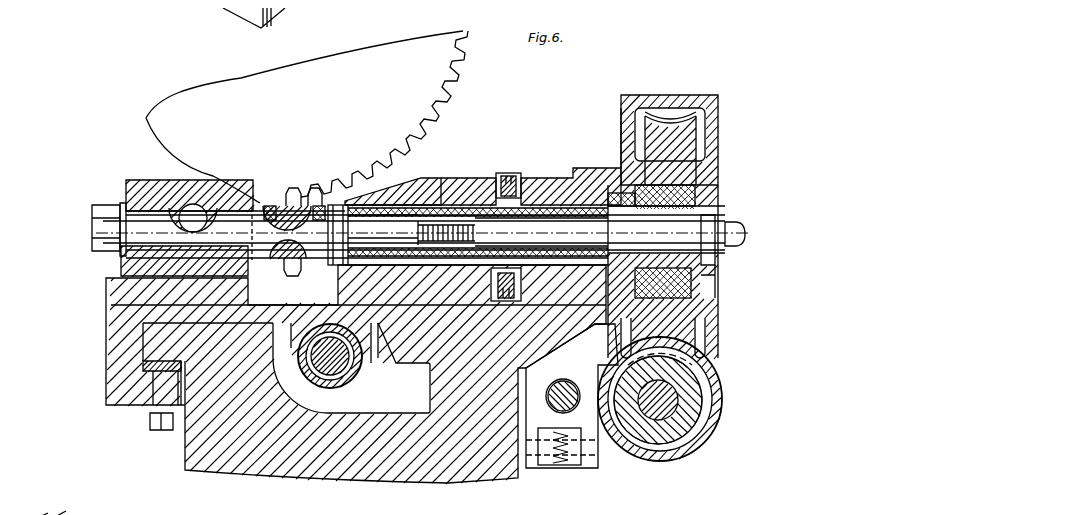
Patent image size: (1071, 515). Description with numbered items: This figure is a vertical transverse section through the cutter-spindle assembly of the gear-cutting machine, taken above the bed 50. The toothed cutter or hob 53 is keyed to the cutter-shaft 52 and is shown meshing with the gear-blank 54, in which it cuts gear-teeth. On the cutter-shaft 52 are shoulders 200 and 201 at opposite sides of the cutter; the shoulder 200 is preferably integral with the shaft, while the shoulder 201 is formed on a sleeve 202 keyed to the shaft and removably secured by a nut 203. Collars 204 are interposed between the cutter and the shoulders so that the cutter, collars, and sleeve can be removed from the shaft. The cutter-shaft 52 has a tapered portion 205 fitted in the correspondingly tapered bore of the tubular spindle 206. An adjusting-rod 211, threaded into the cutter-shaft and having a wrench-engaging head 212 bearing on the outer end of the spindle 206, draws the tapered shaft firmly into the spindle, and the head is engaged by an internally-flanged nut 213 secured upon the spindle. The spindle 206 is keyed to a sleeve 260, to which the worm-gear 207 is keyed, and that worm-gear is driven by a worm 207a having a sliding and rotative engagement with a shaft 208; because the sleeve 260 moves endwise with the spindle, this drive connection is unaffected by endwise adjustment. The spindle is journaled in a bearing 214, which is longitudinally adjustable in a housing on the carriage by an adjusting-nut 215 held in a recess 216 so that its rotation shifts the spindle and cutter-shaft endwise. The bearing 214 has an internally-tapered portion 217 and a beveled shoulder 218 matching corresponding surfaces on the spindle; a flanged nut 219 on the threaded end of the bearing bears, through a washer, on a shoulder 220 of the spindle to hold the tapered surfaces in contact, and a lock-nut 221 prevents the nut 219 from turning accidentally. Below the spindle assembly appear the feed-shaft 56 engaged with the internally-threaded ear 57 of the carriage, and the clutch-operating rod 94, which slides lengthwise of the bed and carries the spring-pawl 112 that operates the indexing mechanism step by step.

The bed 50 is at (177, 442).
The cutter-shaft 52 is at (86, 213).
The toothed cutter or hob 53 is at (288, 178).
The gear-blank 54 is at (335, 47).
The feed-shaft 56 is at (340, 353).
The internally-threaded ear 57 is at (356, 374).
The rod 94 is at (567, 373).
The spring-pawl 112 is at (560, 460).
The shoulder 200 is at (319, 257).
The shoulder 201 is at (247, 255).
The sleeve 202 is at (147, 178).
The nut 203 is at (108, 204).
The collars 204 is at (262, 194).
The tapered portion 205 is at (383, 218).
The tubular spindle 206 is at (550, 170).
The worm-gear 207 is at (678, 137).
The worm 207a is at (687, 395).
The shaft 208 is at (680, 380).
The adjusting-rod 211 is at (518, 225).
The wrench-engaging head 212 is at (720, 223).
The internally-flanged nut 213 is at (710, 200).
The bearing 214 is at (455, 177).
The adjusting-nut 215 is at (492, 167).
The recess 216 is at (485, 280).
The internally-tapered portion 217 is at (423, 197).
The beveled shoulder 218 is at (473, 183).
The nut 219 is at (607, 158).
The shoulder 220 is at (603, 187).
The lock-nut 221 is at (580, 177).
The sleeve 260 is at (683, 277).